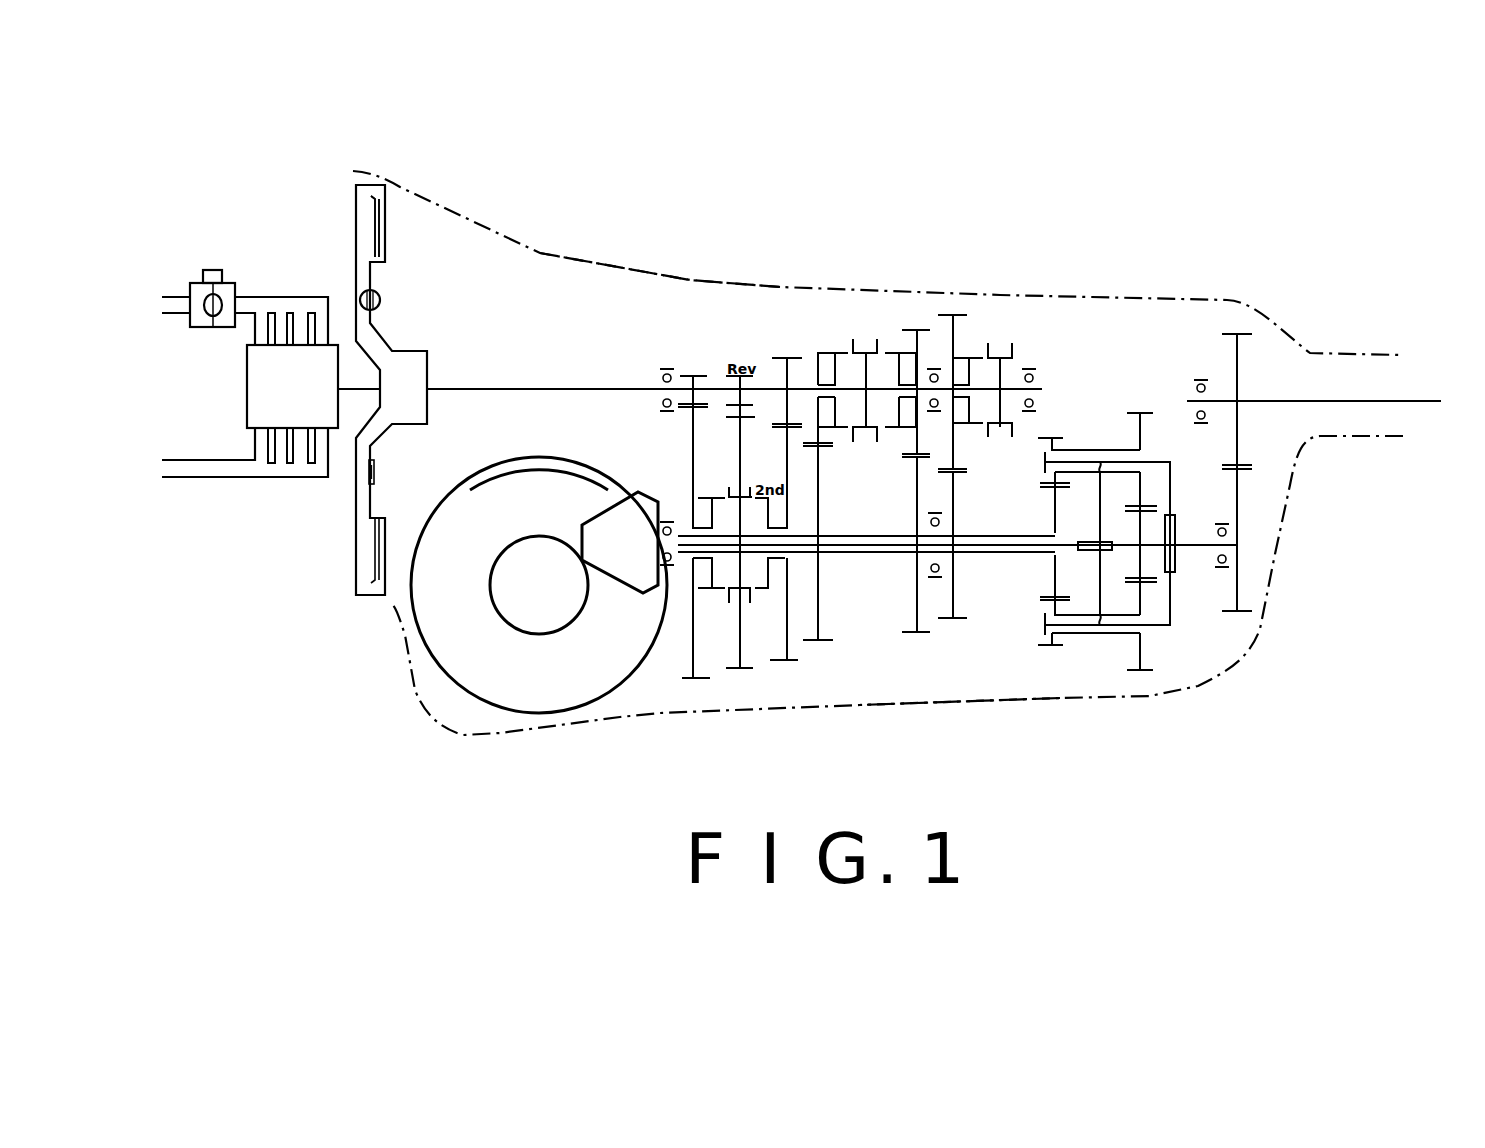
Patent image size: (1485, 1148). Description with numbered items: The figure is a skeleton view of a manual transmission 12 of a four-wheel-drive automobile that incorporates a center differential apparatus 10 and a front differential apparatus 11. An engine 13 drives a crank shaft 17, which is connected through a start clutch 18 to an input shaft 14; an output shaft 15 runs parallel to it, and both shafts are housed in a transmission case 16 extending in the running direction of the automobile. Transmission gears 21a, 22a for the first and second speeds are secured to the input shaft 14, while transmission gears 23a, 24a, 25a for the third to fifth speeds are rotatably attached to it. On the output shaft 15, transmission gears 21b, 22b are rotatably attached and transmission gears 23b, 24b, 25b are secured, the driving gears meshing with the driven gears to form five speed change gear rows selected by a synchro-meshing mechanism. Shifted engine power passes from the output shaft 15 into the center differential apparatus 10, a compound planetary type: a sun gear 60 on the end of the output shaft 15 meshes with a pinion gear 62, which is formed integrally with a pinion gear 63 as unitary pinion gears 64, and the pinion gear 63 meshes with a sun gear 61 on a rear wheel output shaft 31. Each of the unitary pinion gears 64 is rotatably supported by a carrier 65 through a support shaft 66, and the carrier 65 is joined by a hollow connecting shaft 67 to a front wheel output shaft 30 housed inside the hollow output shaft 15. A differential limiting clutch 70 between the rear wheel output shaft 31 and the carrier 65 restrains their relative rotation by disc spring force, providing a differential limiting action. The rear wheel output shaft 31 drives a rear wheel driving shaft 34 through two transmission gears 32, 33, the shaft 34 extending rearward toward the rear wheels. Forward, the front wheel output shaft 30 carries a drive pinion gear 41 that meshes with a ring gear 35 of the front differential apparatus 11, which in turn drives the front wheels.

The center differential apparatus 10 is at (1088, 680).
The front differential apparatus 11 is at (549, 690).
The manual transmission 12 is at (1047, 222).
The engine 13 is at (247, 388).
The input shaft 14 is at (548, 380).
The output shaft 15 is at (867, 553).
The transmission case 16 is at (700, 280).
The crank shaft 17 is at (357, 392).
The start clutch 18 is at (403, 238).
The transmission gear for a first speed 21a is at (690, 372).
The transmission gear for a first speed 21b is at (693, 680).
The transmission gear for a second speed 22a is at (782, 355).
The transmission gear for a second speed 22b is at (785, 661).
The transmission gear for a third speed 23a is at (833, 350).
The transmission gear for a third speed 23b is at (819, 641).
The transmission gear for a fourth speed 24a is at (912, 328).
The transmission gear for a fourth speed 24b is at (915, 633).
The transmission gear for a fifth speed 25a is at (960, 313).
The transmission gear for a fifth speed 25b is at (955, 619).
The front wheel output shaft 30 is at (988, 548).
The rear wheel output shaft 31 is at (1193, 548).
The transmission gear 32 is at (1237, 581).
The transmission gear 33 is at (1237, 360).
The rear wheel driving shaft 34 is at (1385, 405).
The ring gear 35 is at (547, 467).
The drive pinion gear 41 is at (631, 573).
The sun gear 60 is at (1053, 510).
The sun gear 61 is at (1142, 530).
The pinion gear 62 is at (1057, 437).
The pinion gear 63 is at (1140, 412).
The unitary pinion gears 64 is at (1096, 445).
The carrier 65 is at (1055, 580).
The support shaft 66 is at (1117, 633).
The hollow connecting shaft 67 is at (1080, 541).
The differential limiting clutch 70 is at (1178, 528).